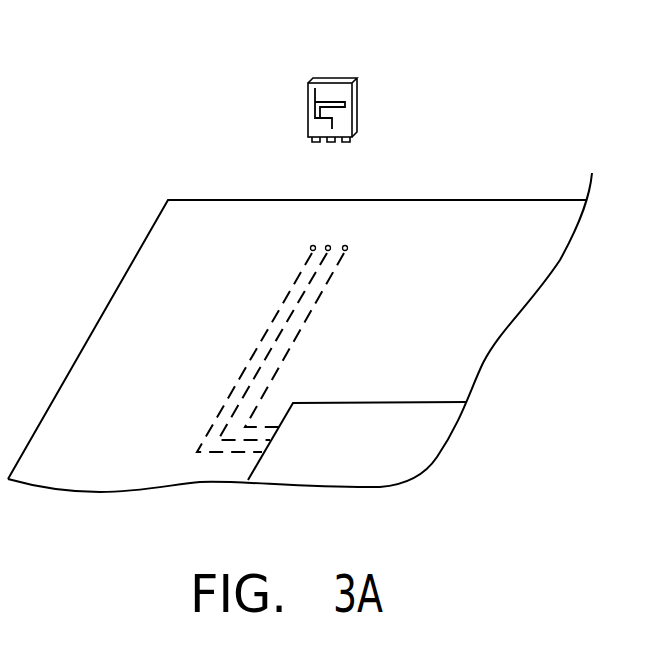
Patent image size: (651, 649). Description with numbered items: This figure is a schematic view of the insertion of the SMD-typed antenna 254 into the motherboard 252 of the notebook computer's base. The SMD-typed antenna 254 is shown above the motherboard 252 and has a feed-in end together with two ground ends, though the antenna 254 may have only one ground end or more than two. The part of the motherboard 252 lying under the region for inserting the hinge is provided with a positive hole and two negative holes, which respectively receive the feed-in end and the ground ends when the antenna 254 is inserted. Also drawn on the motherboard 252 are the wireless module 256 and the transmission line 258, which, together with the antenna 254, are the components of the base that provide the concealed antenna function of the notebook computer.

The motherboard 252 is at (113, 373).
The SMD-typed antenna 254 is at (331, 80).
The wireless module 256 is at (381, 402).
The transmission line 258 is at (323, 302).